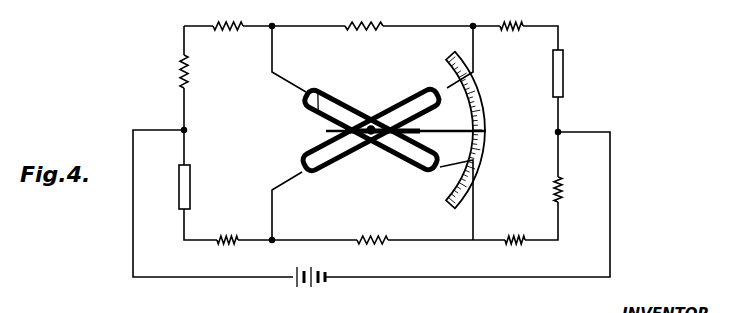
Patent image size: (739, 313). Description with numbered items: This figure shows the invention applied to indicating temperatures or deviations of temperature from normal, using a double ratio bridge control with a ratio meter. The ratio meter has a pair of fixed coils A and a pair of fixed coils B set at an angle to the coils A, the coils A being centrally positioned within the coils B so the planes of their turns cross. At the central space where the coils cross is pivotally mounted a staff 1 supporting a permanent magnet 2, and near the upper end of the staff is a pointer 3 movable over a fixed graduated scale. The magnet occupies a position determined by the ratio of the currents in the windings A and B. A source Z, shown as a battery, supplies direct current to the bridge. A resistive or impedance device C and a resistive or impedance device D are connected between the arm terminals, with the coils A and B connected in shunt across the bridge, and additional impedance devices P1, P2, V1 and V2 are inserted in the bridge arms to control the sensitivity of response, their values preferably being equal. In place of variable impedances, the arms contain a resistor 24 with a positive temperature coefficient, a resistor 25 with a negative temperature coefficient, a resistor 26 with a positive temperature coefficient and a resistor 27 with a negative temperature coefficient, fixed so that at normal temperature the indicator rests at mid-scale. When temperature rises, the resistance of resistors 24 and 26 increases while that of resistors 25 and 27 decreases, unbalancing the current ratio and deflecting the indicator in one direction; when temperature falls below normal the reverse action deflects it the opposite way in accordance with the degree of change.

The staff 1 is at (372, 136).
The permanent magnet 2 is at (320, 132).
The pointer 3 is at (448, 131).
The resistor having a positive temperature coefficient of resistance 24 is at (179, 72).
The resistor having a negative temperature coefficient of resistance 25 is at (179, 181).
The resistor having a positive temperature coefficient of resistance 26 is at (563, 188).
The resistor having a negative temperature coefficient of resistance 27 is at (563, 70).
The fixed coils A is at (350, 103).
The fixed coils B is at (407, 98).
The resistive or impedance device C is at (364, 17).
The resistive or impedance device D is at (372, 230).
The additional impedance device P1 is at (228, 40).
The additional impedance device P2 is at (230, 230).
The additional impedance device V1 is at (511, 39).
The additional impedance device V2 is at (516, 230).
The source Z is at (311, 287).